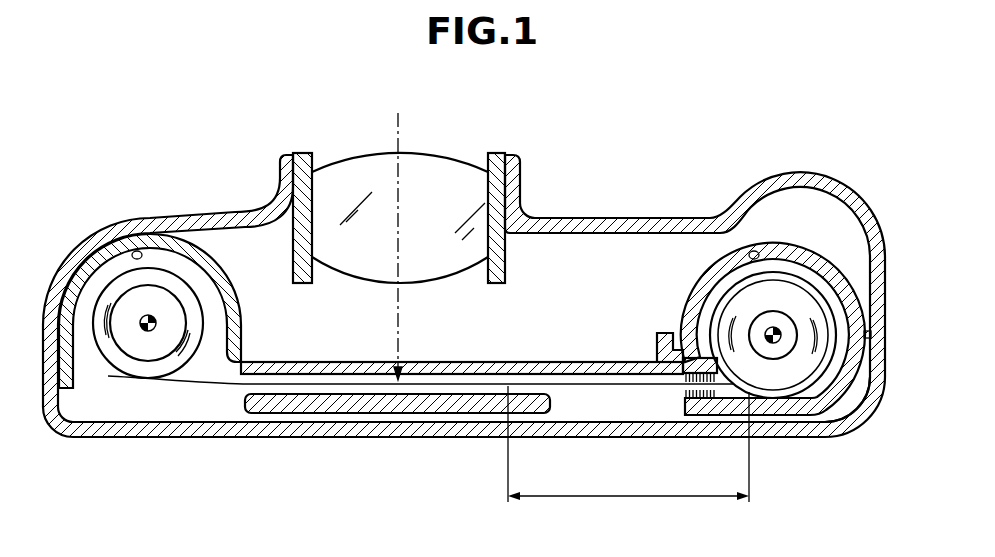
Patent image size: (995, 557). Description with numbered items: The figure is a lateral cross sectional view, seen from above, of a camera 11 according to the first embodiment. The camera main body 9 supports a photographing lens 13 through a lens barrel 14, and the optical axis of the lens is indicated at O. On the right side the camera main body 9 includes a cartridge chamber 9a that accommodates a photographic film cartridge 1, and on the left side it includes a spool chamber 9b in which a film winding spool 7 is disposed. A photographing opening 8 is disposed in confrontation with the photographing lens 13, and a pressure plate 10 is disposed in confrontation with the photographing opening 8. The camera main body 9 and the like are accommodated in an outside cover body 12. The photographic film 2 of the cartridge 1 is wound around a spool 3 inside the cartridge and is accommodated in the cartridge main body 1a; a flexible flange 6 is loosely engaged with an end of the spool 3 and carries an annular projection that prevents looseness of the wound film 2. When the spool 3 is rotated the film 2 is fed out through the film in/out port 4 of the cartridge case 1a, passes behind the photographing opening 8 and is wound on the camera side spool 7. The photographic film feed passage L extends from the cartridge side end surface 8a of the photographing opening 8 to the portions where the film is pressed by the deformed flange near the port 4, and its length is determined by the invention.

The photographic film cartridge 1 is at (838, 386).
The cartridge main body 1a is at (817, 393).
The photographic film 2 is at (580, 388).
The spool 3 is at (778, 353).
The film in/out port 4 is at (685, 397).
The flange 6 is at (757, 388).
The film winding spool 7 is at (159, 302).
The photographing opening 8 is at (460, 365).
The cartridge side end surface 8a is at (510, 363).
The camera main body 9 is at (577, 360).
The cartridge chamber 9a is at (752, 252).
The spool chamber 9b is at (136, 252).
The pressure plate 10 is at (337, 400).
The camera 11 is at (645, 203).
The outside cover body 12 is at (243, 214).
The photographing lens 13 is at (457, 158).
The lens barrel 14 is at (497, 157).
The optical axis O is at (398, 128).
The photographic film feed passage L is at (628, 444).